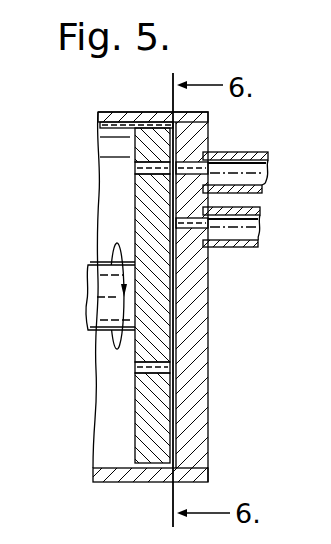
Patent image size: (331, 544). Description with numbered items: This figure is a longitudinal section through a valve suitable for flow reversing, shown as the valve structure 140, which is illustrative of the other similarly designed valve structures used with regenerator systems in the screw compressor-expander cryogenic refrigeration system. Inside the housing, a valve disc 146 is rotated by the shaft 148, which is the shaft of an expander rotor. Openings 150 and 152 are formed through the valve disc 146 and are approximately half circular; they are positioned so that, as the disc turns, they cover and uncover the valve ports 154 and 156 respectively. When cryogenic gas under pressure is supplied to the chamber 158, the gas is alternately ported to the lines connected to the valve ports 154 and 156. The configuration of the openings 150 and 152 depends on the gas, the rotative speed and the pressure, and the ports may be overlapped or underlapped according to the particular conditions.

The valve structure 140 is at (85, 120).
The valve disc 146 is at (167, 433).
The shaft 148 is at (100, 318).
The opening 150 is at (166, 369).
The opening 152 is at (137, 172).
The valve port 154 is at (190, 230).
The valve port 156 is at (197, 170).
The chamber 158 is at (108, 392).